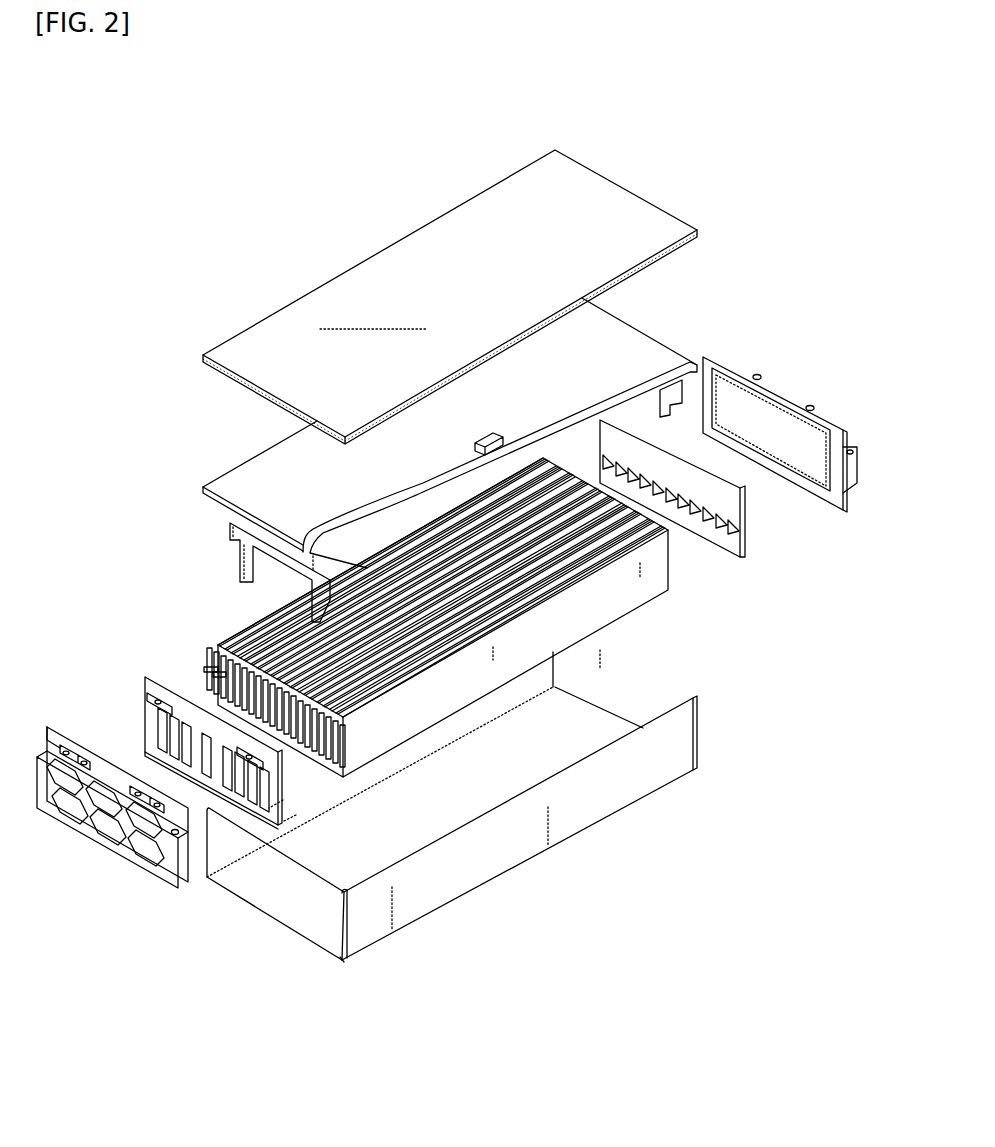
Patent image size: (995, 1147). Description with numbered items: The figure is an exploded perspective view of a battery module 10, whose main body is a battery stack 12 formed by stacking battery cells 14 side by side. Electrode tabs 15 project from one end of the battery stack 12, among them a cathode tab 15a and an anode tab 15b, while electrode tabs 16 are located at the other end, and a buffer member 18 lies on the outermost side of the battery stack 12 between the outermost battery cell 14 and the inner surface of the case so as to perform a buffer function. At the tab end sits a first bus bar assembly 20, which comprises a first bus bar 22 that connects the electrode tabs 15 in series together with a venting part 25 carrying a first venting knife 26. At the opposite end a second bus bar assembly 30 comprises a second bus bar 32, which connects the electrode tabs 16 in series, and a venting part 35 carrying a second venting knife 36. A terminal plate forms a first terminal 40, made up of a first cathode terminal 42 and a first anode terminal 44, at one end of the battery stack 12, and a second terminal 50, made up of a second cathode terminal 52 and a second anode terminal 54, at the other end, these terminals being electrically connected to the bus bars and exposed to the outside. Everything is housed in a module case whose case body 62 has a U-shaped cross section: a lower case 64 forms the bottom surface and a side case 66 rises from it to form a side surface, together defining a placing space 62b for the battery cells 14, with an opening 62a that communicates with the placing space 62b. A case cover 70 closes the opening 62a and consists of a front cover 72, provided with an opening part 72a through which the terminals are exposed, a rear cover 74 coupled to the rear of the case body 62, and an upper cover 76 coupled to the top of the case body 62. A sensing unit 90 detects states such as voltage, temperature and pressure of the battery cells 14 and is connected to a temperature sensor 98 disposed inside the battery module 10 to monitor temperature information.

The battery module 10 is at (59, 95).
The battery stack 12 is at (598, 624).
The battery cell 14 is at (600, 578).
The electrode tab 15 is at (338, 748).
The cathode tab 15a is at (206, 668).
The anode tab 15b is at (216, 646).
The electrode tab 16 is at (673, 574).
The buffer member 18 is at (557, 650).
The first bus bar assembly 20 is at (300, 776).
The first bus bar 22 is at (273, 823).
The venting part 25 is at (350, 808).
The first venting knife 26 is at (289, 796).
The second bus bar assembly 30 is at (772, 572).
The second bus bar 32 is at (730, 544).
The venting part 35 is at (726, 495).
The second venting knife 36 is at (752, 557).
The first terminal 40 is at (215, 752).
The first cathode terminal 42 is at (147, 688).
The first anode terminal 44 is at (303, 822).
The second terminal 50 is at (761, 426).
The second cathode terminal 52 is at (814, 418).
The second anode terminal 54 is at (683, 393).
The case body 62 is at (477, 882).
The opening 62a is at (365, 888).
The placing space 62b is at (323, 909).
The lower case 64 is at (280, 905).
The side case 66 is at (568, 820).
The case cover 70 is at (450, 542).
The front cover 72 is at (150, 872).
The opening part 72a is at (72, 733).
The rear cover 74 is at (770, 373).
The upper cover 76 is at (415, 248).
The sensing unit 90 is at (232, 540).
The temperature sensor 98 is at (617, 340).